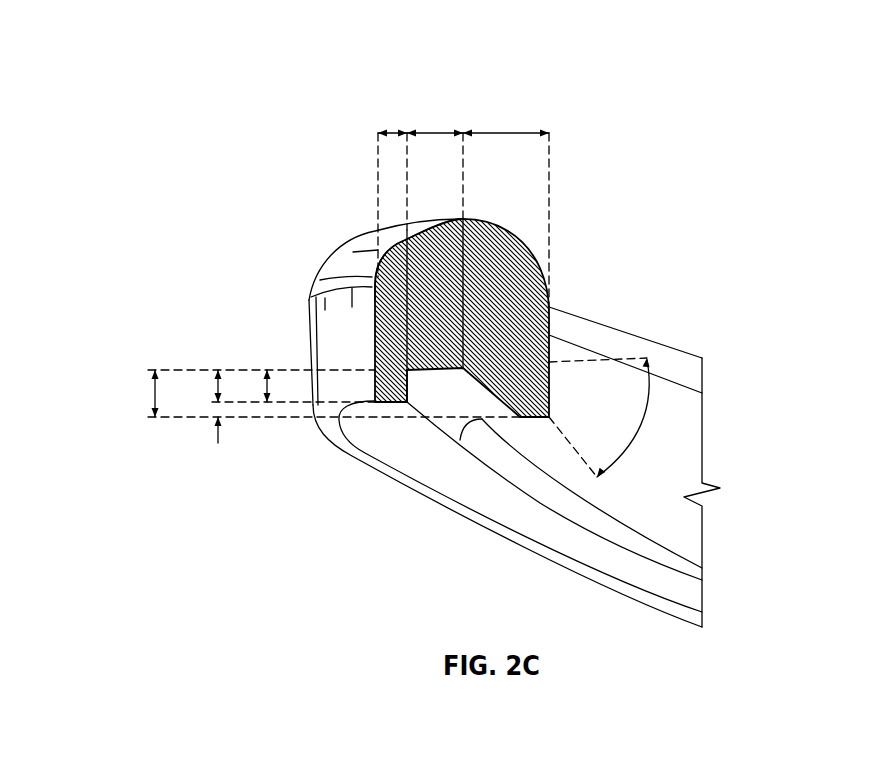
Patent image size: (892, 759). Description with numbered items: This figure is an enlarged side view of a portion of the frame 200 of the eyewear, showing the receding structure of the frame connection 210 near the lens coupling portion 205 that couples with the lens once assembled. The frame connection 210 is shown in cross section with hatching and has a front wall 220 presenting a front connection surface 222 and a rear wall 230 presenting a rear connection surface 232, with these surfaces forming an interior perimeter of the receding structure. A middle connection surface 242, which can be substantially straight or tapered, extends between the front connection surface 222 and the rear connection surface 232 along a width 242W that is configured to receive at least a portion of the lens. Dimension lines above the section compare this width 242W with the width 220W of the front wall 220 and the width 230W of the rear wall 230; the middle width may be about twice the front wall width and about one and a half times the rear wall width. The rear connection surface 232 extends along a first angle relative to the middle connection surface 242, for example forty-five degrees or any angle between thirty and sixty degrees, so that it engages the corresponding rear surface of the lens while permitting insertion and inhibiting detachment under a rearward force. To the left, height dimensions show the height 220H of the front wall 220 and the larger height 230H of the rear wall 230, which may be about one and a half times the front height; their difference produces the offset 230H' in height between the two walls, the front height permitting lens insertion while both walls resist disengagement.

The frame 200 is at (205, 175).
The lens coupling portion 205 is at (614, 322).
The frame connection 210 is at (515, 505).
The front wall 220 is at (368, 395).
The front connection surface 222 is at (428, 425).
The rear wall 230 is at (551, 407).
The rear connection surface 232 is at (498, 406).
The middle connection surface 242 is at (375, 277).
The width of the front wall 220W is at (398, 130).
The width of the middle connection surface 242W is at (433, 130).
The width of the rear wall 230W is at (507, 130).
The height of the front wall 220H is at (265, 390).
The height of the rear wall 230H is at (302, 398).
The offset in height 230H' is at (167, 445).